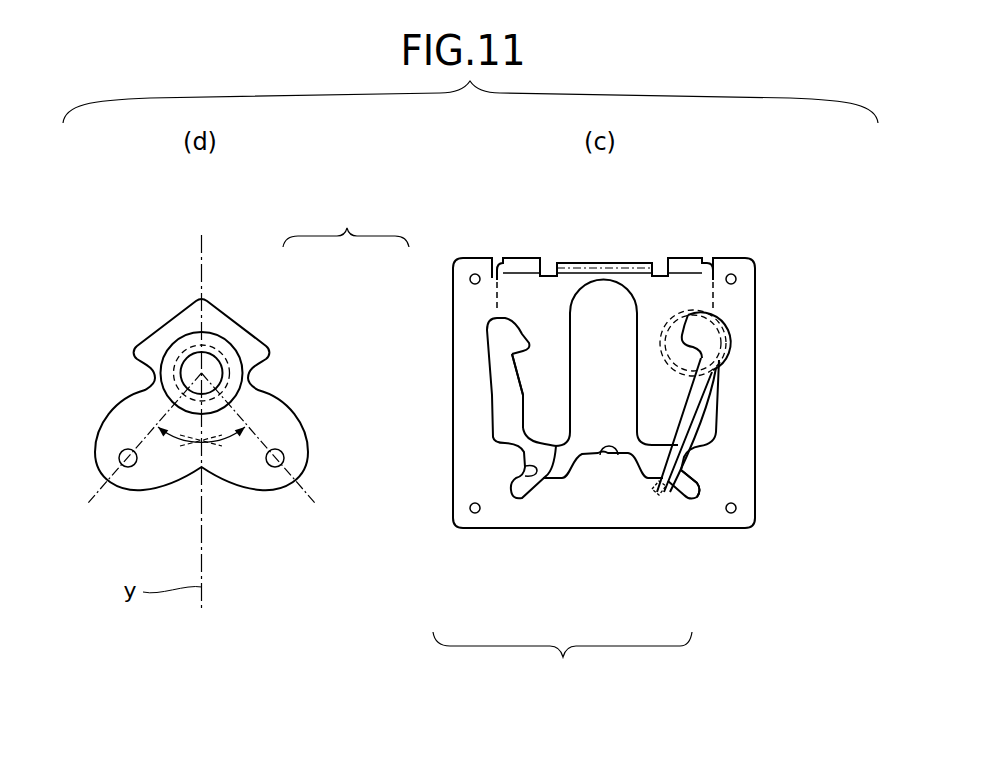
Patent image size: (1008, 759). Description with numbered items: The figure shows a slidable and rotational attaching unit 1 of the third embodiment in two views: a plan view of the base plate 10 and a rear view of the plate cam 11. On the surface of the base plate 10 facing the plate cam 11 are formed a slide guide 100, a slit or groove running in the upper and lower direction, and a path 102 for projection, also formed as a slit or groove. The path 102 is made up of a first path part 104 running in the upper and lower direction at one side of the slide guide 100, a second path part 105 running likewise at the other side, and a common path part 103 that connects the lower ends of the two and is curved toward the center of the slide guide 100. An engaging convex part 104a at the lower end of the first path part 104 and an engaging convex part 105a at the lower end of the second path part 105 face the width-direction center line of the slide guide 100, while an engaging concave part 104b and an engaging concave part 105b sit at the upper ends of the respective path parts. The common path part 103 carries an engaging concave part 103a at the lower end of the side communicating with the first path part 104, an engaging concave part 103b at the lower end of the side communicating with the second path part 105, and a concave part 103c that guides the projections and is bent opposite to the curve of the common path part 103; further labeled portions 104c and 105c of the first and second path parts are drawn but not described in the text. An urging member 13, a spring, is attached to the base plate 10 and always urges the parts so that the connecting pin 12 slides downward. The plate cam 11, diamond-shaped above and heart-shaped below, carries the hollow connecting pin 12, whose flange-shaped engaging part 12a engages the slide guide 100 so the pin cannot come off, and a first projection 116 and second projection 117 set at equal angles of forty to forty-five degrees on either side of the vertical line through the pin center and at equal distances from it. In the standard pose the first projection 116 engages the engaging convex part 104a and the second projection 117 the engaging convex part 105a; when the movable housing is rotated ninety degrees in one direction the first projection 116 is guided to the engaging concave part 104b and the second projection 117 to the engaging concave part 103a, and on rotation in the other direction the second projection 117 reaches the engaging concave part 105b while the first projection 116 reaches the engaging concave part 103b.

The hinge unit 1 is at (336, 210).
The base plate 10 is at (453, 300).
The plate cam 11 is at (253, 337).
The connecting pin 12 is at (223, 373).
The engaging part 12a is at (178, 340).
The urging member 13 is at (713, 300).
The slide guide 100 is at (572, 355).
The path for projection 102 is at (562, 661).
The common path part 103 is at (628, 535).
The engaging concave part 103a is at (553, 440).
The engaging concave part 103b is at (703, 495).
The concave part 103c is at (608, 458).
The first path part 104 is at (459, 480).
The engaging convex part 104a is at (530, 470).
The engaging concave part 104b is at (527, 340).
The arm edge 104c is at (527, 433).
The second path part 105 is at (745, 476).
The engaging convex part 105a is at (692, 468).
The engaging concave part 105b is at (683, 343).
The side portion 105c is at (650, 446).
The first projection 116 is at (273, 467).
The second projection 117 is at (127, 467).